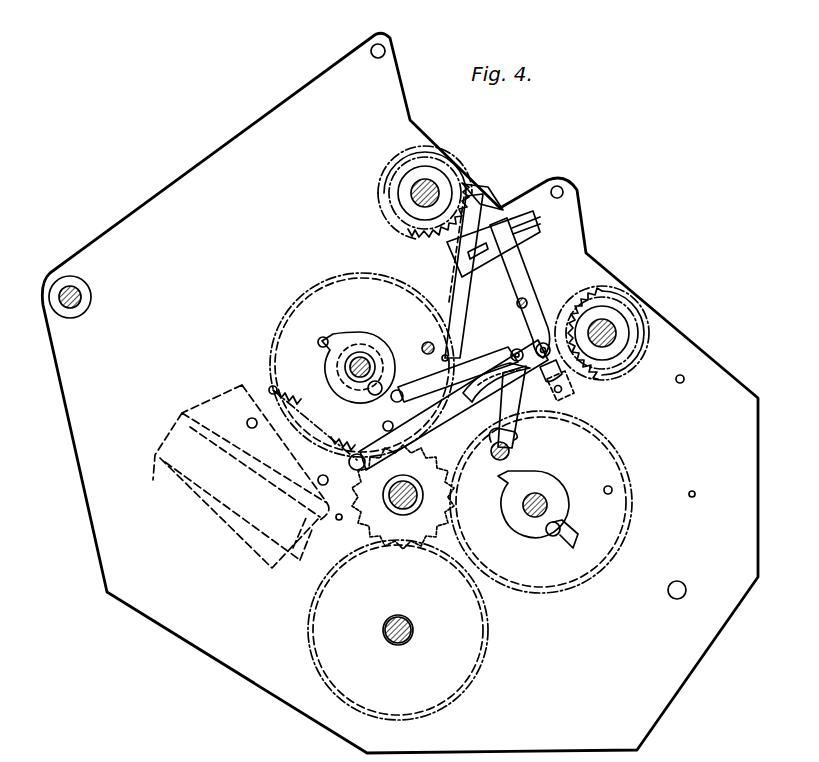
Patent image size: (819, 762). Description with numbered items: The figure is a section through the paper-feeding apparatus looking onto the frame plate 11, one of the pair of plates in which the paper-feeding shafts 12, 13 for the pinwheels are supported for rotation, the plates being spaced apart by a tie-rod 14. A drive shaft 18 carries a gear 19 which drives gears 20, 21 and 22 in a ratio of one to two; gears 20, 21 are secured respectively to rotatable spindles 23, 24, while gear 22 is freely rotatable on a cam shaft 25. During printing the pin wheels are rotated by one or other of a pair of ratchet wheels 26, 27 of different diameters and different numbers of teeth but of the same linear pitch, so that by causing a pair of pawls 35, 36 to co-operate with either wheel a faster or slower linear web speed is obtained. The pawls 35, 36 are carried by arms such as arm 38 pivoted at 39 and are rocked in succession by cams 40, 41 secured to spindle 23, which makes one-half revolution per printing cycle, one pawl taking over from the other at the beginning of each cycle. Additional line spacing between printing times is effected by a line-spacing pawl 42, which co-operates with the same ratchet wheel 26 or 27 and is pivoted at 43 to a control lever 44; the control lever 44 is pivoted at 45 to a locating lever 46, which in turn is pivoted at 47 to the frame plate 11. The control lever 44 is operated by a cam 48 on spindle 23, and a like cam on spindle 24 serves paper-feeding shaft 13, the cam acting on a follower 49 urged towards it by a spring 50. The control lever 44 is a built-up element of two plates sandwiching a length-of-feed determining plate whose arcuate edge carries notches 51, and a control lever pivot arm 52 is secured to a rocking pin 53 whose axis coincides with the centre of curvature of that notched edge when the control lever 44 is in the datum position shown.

The frame plate 11 is at (307, 88).
The paper-feeding shaft 12 is at (428, 188).
The paper-feeding shaft 13 is at (608, 332).
The tie-rod 14 is at (68, 292).
The drive shaft 18 is at (396, 500).
The gear 19 is at (430, 515).
The gear 20 is at (348, 272).
The gear 21 is at (618, 455).
The gear 22 is at (485, 668).
The spindle 23 is at (363, 362).
The spindle 24 is at (541, 500).
The cam shaft 25 is at (413, 630).
The ratchet wheel 26 is at (466, 177).
The ratchet wheel 27 is at (420, 215).
The pawl 35 is at (467, 280).
The pawl 36 is at (450, 290).
The arm 38 is at (424, 344).
The pivot 39 is at (450, 355).
The cam 40 is at (345, 340).
The cam 41 is at (330, 357).
The line-spacing pawl 42 is at (497, 198).
The pivot 43 is at (562, 318).
The control lever 44 is at (544, 343).
The pivot 45 is at (412, 430).
The locating lever 46 is at (368, 447).
The pivot 47 is at (515, 350).
The cam 48 is at (320, 339).
The follower 49 is at (362, 406).
The spring 50 is at (330, 433).
The length-of-feed determining notches 51 is at (470, 405).
The control lever pivot arm 52 is at (545, 397).
The rocking pin 53 is at (511, 451).